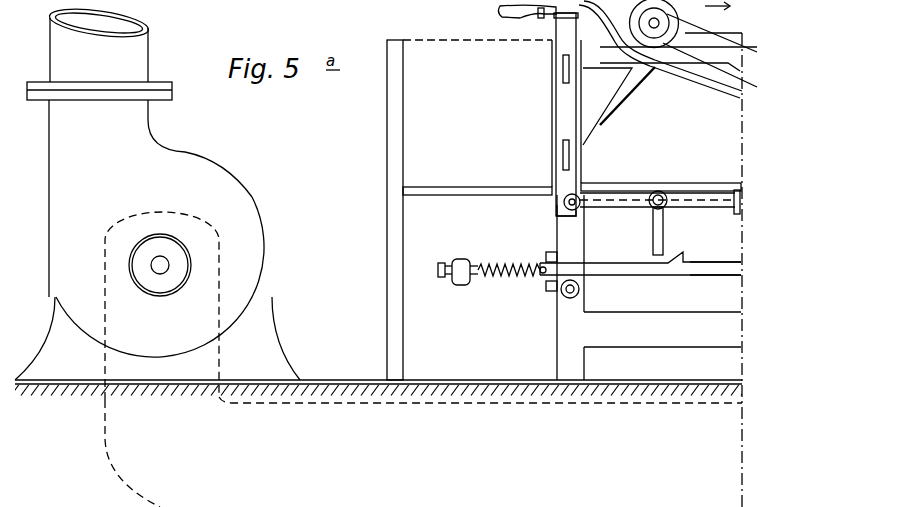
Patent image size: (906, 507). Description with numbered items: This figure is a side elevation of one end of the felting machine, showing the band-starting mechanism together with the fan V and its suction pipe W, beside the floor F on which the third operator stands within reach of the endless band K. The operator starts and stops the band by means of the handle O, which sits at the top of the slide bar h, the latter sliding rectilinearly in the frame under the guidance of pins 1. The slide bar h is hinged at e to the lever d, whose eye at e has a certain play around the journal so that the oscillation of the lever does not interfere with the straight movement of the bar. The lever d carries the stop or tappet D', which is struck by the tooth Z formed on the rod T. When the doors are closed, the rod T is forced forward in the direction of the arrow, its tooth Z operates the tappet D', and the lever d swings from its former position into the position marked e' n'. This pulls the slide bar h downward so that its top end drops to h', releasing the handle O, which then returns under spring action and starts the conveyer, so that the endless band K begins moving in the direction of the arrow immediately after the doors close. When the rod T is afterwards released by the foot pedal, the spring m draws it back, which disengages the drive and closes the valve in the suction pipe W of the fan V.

The fan V is at (245, 197).
The suction pipe W is at (110, 442).
The floor F is at (572, 190).
The dropped position of slide bar top end h' is at (548, 114).
The slots 1 is at (566, 165).
The slide bar h is at (614, 80).
The handle o is at (515, 12).
The endless band K is at (732, 60).
The hinge point of slide bar on lever e is at (583, 187).
The moved position of lever end e' is at (569, 224).
The lever d is at (681, 198).
The moved position of lever end n' is at (747, 190).
The stop or tappet D' is at (682, 231).
The spring m is at (492, 264).
The tooth Z is at (679, 262).
The rod T is at (723, 268).